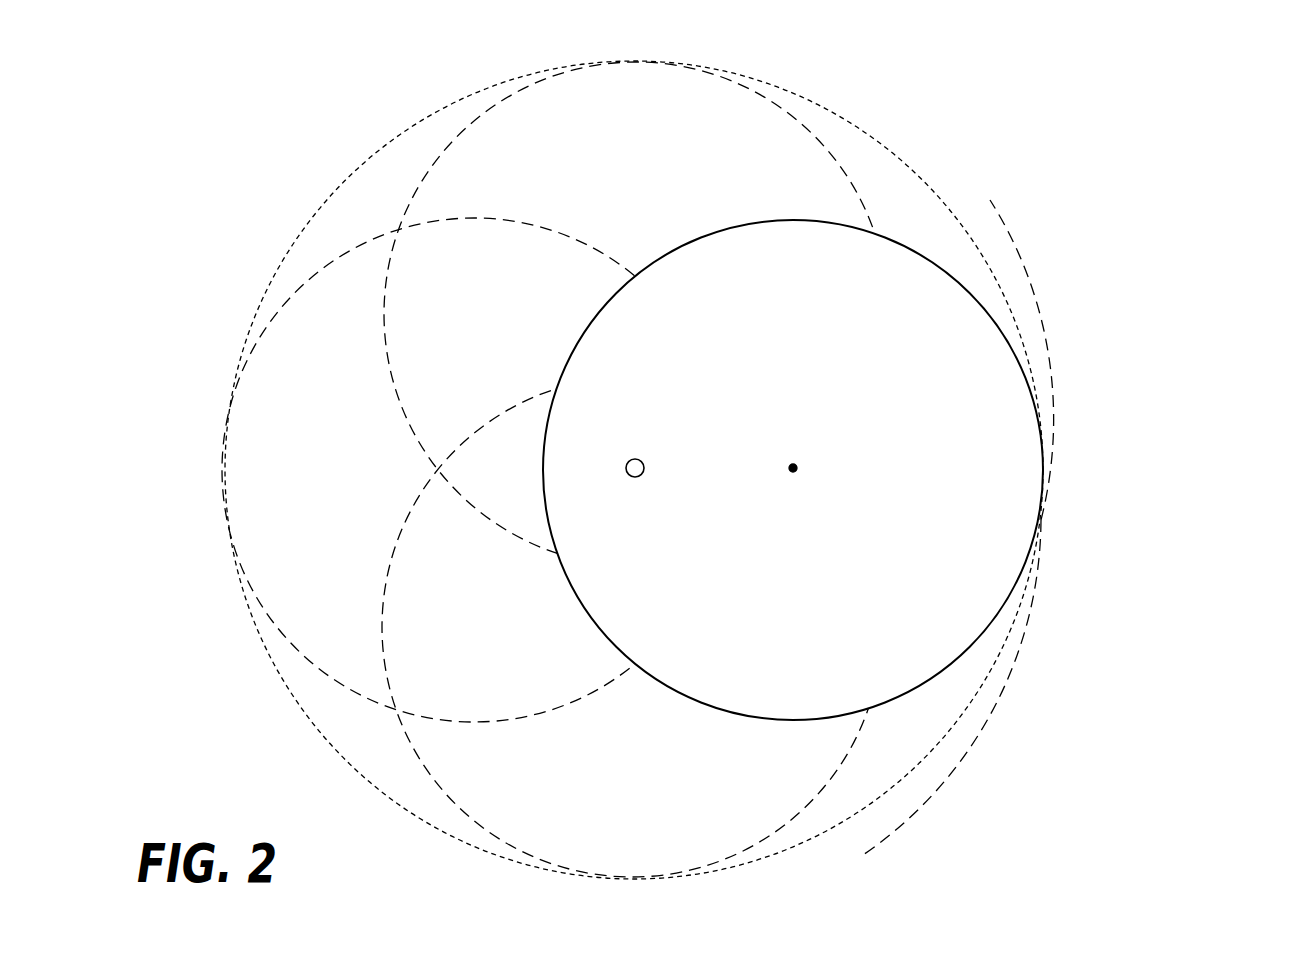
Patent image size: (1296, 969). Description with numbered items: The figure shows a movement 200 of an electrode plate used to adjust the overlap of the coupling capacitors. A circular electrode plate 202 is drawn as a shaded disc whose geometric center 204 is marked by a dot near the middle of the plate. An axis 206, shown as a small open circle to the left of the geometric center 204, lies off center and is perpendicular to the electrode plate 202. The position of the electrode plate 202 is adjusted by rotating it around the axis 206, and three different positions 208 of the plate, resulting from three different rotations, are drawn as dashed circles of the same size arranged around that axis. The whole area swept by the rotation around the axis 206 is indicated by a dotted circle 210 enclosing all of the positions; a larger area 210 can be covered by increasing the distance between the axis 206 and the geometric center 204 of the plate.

The movement of an electrode plate 200 is at (1220, 82).
The circular electrode plate 202 is at (943, 269).
The geometric center 204 is at (796, 464).
The axis 206 is at (640, 459).
The positions of the electrode plate 208 is at (597, 248).
The circle 210 is at (373, 784).